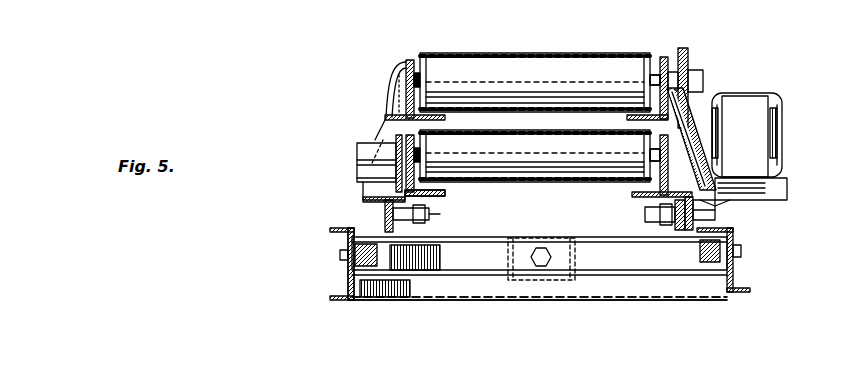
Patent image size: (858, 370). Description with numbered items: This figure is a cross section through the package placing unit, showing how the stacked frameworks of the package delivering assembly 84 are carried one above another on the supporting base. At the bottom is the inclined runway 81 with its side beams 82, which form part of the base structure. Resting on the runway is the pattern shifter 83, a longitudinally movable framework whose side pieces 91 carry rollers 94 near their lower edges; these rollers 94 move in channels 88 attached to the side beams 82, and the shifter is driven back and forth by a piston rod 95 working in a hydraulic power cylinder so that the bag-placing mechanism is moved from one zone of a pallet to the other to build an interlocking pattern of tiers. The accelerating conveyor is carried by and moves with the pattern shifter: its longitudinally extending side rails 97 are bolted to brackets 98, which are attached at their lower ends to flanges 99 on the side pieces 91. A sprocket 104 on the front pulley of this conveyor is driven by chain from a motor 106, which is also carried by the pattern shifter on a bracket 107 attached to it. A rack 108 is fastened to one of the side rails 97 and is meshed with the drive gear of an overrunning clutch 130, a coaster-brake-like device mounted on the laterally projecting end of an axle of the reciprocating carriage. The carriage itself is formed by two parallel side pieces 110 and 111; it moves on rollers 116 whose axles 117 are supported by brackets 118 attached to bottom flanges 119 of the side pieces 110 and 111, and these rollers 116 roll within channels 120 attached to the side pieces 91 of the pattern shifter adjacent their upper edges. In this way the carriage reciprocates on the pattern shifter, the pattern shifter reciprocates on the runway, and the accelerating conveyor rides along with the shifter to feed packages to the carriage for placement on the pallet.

The inclined runway 81 is at (580, 296).
The side beams 82 is at (340, 285).
The pattern shifter 83 is at (539, 268).
The package delivering assembly 84 is at (589, 49).
The channels 88 is at (355, 265).
The side pieces 91 is at (700, 215).
The rollers 94 is at (340, 242).
The piston rod 95 is at (416, 271).
The side rails 97 is at (406, 99).
The brackets 98 is at (695, 118).
The flanges 99 is at (722, 203).
The sprocket 104 is at (690, 50).
The motor 106 is at (784, 136).
The bracket 107 is at (788, 190).
The rack 108 is at (395, 126).
The side piece 110 is at (578, 158).
The side piece 111 is at (438, 158).
The rollers 116 is at (645, 214).
The axles 117 is at (430, 216).
The brackets 118 is at (445, 193).
The bottom flanges 119 is at (363, 188).
The channels 120 is at (676, 240).
The overrunning clutch 130 is at (357, 155).